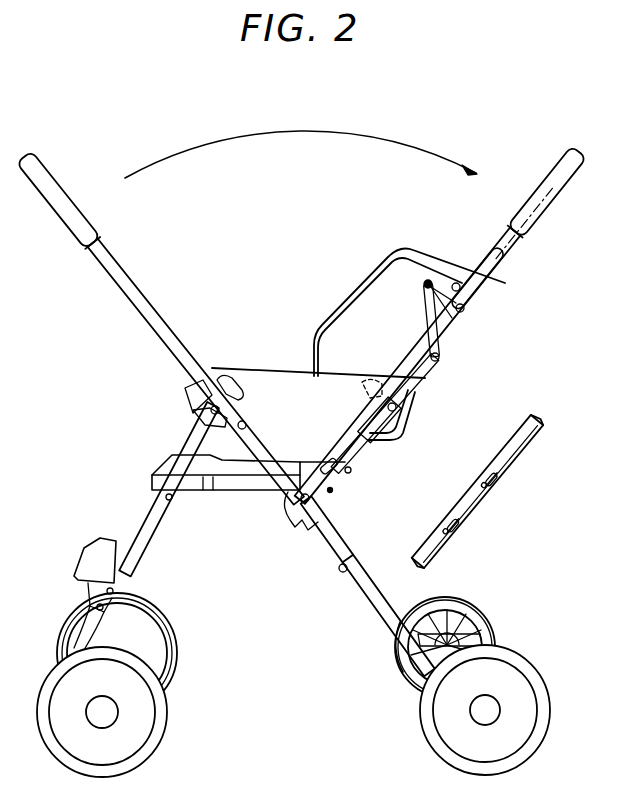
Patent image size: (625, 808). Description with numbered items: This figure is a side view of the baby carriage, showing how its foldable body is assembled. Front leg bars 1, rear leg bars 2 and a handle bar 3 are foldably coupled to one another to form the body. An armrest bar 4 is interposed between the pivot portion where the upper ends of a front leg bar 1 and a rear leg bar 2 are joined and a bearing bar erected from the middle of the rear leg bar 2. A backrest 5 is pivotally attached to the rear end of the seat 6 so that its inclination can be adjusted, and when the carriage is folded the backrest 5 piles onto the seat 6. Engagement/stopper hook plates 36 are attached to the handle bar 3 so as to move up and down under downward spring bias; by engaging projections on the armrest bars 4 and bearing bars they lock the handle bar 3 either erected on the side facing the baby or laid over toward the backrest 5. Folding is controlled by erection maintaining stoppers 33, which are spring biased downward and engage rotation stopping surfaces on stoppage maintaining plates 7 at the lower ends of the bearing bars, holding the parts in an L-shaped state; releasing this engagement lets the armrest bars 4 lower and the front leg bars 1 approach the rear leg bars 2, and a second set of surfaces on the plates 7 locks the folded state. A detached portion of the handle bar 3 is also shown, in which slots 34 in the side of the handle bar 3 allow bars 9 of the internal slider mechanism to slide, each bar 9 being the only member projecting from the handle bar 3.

The front leg bar 1 is at (136, 552).
The rear leg bar 2 is at (378, 622).
The handle bar 3 is at (160, 340).
The armrest bar 4 is at (283, 418).
The backrest 5 is at (362, 270).
The seat 6 is at (240, 470).
The stoppage maintaining plate 7 is at (316, 535).
The bar 9 is at (438, 549).
The erection maintaining stopper 33 is at (332, 487).
The slot 34 is at (436, 536).
The engagement/stopper hook plate 36 is at (226, 395).